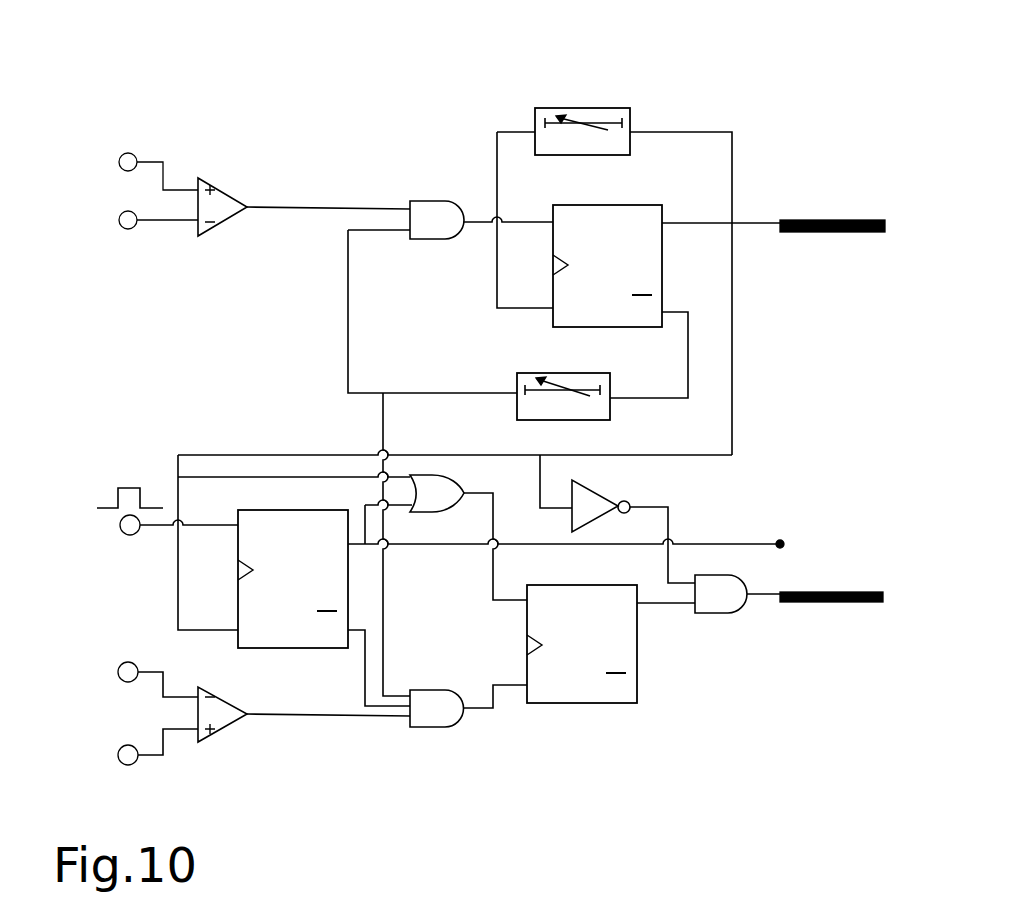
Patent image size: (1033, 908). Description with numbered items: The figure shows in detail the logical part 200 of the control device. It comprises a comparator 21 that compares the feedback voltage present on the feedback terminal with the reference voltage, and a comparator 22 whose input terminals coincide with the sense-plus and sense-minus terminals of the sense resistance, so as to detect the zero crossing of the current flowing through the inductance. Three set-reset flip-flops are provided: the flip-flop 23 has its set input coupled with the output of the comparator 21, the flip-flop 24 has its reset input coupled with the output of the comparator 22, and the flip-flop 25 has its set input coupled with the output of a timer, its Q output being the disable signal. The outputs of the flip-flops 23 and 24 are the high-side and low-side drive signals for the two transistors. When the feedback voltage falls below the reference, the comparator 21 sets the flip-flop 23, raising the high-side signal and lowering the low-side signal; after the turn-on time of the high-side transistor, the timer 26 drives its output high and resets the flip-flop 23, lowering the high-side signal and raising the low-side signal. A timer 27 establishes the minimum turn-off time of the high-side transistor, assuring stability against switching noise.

The logical part 200 is at (165, 91).
The comparator 21 is at (224, 206).
The comparator 22 is at (222, 712).
The set-reset flip-flop 23 is at (662, 207).
The set-reset flip-flop 24 is at (620, 637).
The set-reset flip-flop 25 is at (313, 528).
The timer 26 is at (623, 118).
The timer 27 is at (570, 418).